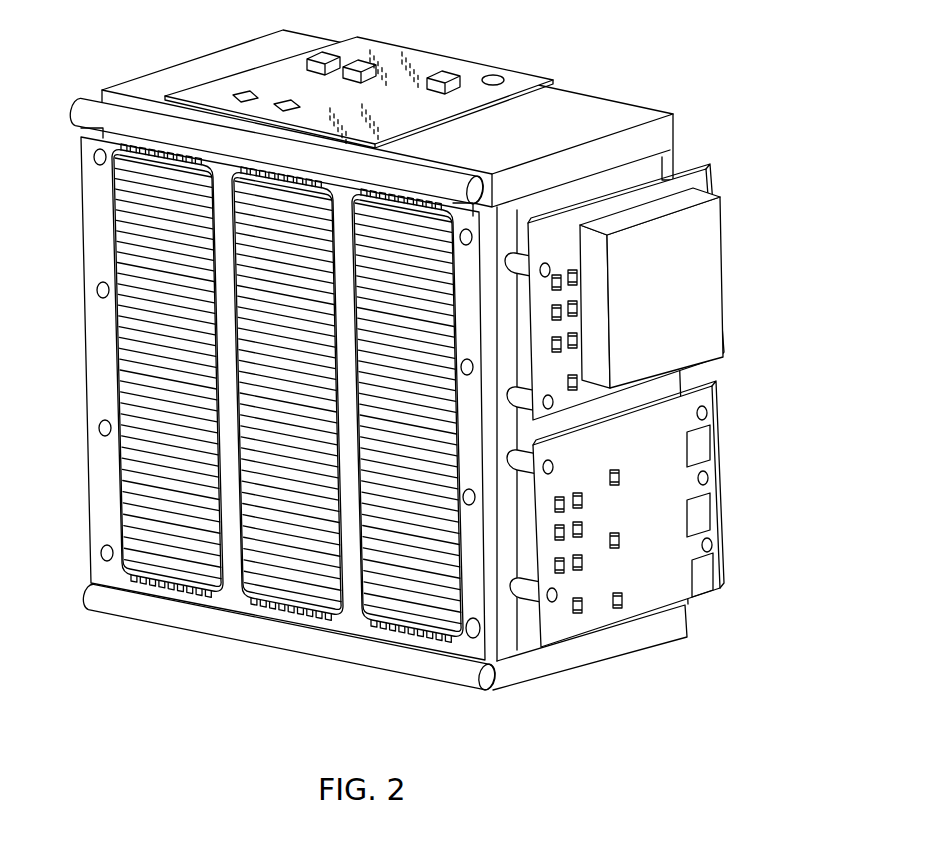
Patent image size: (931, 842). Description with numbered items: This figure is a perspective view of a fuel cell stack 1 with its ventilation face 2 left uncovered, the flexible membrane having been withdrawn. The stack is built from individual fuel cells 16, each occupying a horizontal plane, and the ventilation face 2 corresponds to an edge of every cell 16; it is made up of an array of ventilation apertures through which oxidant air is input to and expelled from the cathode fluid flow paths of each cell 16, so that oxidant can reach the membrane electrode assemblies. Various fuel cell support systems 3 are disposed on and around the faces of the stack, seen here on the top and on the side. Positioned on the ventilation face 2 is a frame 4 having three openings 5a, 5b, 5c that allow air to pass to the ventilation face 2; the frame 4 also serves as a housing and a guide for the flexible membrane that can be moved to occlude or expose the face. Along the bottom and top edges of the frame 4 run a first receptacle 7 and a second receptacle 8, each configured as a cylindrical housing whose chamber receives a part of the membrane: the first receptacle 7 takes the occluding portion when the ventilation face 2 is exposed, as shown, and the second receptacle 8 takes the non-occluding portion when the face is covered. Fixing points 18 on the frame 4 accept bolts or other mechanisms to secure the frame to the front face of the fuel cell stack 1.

The fuel cell stack 1 is at (736, 123).
The ventilation face 2 is at (143, 325).
The fuel cell support systems 3 is at (440, 68).
The frame 4 is at (100, 494).
The opening 5a is at (180, 570).
The opening 5b is at (298, 590).
The opening 5c is at (427, 618).
The first receptacle 7 is at (105, 600).
The second receptacle 8 is at (88, 108).
The fuel cells 16 is at (130, 217).
The fixing points 18 is at (480, 633).